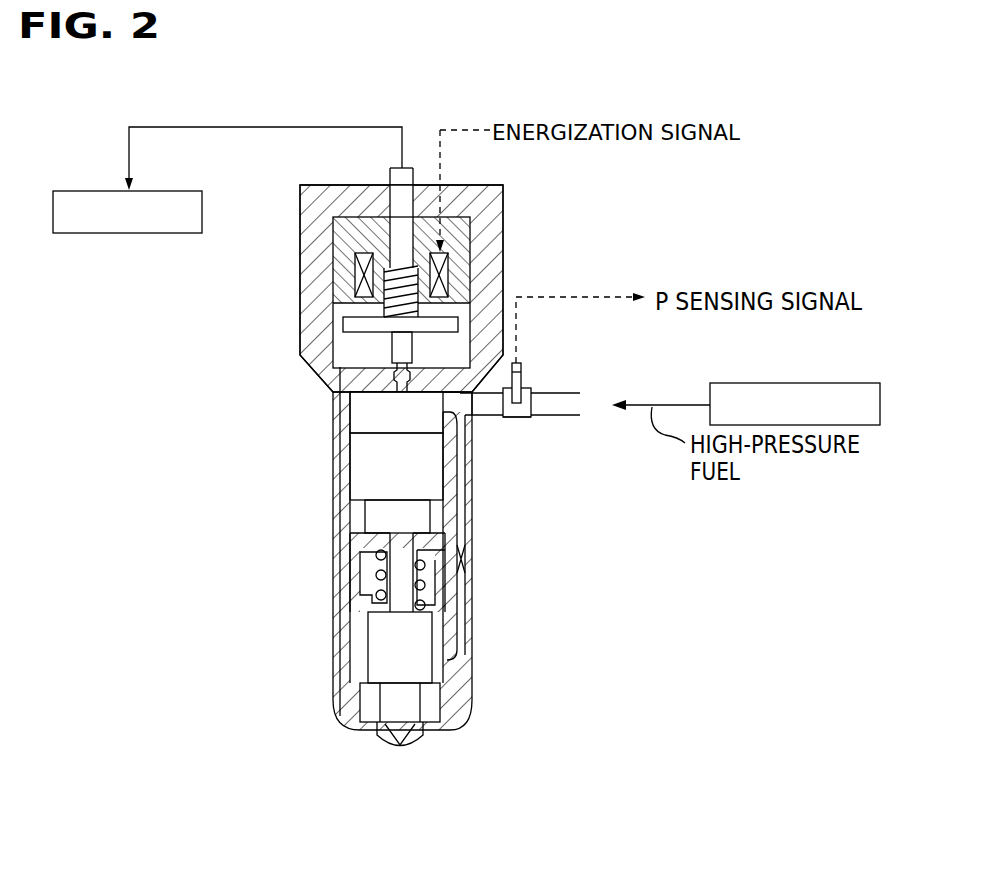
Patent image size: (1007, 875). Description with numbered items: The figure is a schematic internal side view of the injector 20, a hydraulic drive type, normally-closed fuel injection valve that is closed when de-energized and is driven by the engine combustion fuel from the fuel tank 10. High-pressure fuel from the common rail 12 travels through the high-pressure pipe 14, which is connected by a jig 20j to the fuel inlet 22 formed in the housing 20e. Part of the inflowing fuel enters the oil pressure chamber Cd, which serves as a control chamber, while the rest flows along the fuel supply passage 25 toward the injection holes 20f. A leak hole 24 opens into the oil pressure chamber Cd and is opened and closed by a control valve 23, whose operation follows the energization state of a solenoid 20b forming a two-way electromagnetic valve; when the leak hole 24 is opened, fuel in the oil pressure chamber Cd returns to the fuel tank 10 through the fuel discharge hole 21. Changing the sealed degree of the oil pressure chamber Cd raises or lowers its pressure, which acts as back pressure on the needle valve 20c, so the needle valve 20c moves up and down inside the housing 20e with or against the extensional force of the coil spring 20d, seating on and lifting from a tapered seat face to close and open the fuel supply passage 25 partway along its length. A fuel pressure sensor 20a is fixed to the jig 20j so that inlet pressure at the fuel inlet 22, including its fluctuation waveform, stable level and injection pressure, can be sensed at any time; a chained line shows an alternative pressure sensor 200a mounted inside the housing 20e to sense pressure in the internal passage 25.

The fuel tank 10 is at (94, 190).
The common rail 12 is at (766, 384).
The high-pressure pipe 14 is at (578, 417).
The injector 20 is at (580, 219).
The fuel pressure sensor 20a is at (522, 376).
The solenoid 20b is at (356, 268).
The needle valve 20c is at (370, 640).
The spring 20d is at (366, 560).
The housing 20e is at (503, 266).
The injection holes 20f is at (421, 736).
The jig 20j is at (527, 418).
The fuel discharge hole 21 is at (404, 168).
The fuel inlet 22 is at (483, 417).
The control valve 23 is at (392, 348).
The leak hole 24 is at (394, 374).
The fuel supply passage 25 is at (464, 640).
The pressure sensor 200a is at (468, 566).
The oil pressure chamber Cd is at (364, 423).